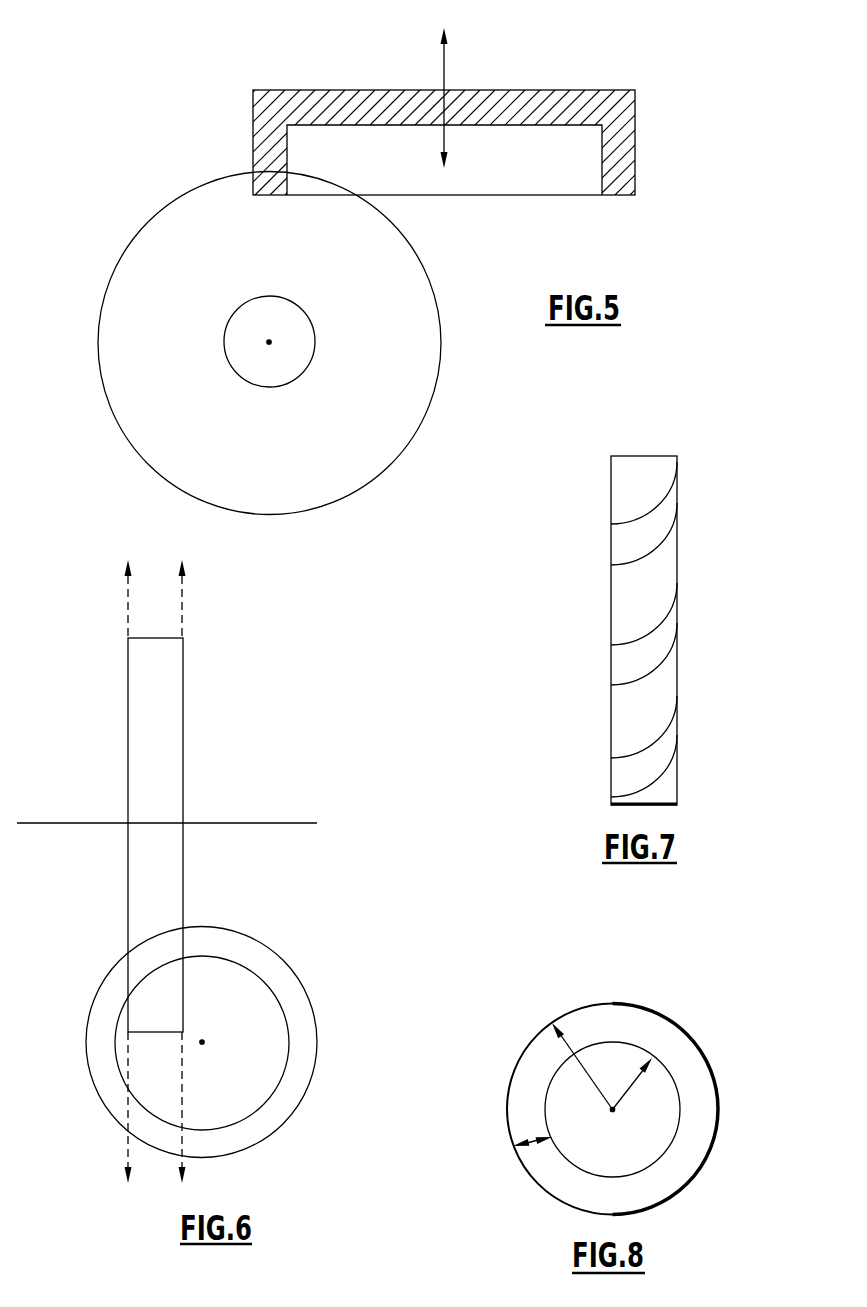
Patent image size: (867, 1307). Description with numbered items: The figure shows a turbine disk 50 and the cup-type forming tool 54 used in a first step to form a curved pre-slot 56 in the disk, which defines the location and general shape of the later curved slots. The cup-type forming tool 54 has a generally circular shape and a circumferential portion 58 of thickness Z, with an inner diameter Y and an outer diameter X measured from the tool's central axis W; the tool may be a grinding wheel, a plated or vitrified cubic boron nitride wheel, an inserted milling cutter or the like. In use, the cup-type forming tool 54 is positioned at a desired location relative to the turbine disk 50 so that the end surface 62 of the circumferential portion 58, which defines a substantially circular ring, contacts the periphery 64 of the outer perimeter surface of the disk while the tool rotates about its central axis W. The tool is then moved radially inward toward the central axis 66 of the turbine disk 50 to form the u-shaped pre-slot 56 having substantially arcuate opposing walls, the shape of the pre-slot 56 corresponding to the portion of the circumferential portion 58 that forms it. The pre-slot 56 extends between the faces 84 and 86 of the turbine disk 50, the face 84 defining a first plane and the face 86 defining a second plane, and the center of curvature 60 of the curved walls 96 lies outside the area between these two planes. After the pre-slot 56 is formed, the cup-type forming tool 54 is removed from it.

In FIG. 5, the turbine disk 50 is at (130, 403).
In FIG. 6, the turbine disk 50 is at (163, 693).
In FIG. 7, the turbine disk 50 is at (573, 609).
In FIG. 5, the cup-type forming tool 54 is at (480, 98).
In FIG. 6, the cup-type forming tool 54 is at (292, 998).
In FIG. 8, the cup-type forming tool 54 is at (726, 1039).
In FIG. 7, the pre-slot 56 is at (637, 544).
In FIG. 5, the circumferential portion 58 is at (267, 185).
In FIG. 6, the circumferential portion 58 is at (300, 1048).
In FIG. 8, the circumferential portion 58 is at (702, 1120).
In FIG. 6, the center of curvature 60 is at (202, 1042).
In FIG. 5, the end surface 62 is at (272, 195).
In FIG. 5, the periphery 64 is at (440, 360).
In FIG. 5, the central axis 66 is at (269, 342).
In FIG. 6, the central axis 66 is at (153, 822).
In FIG. 6, the face 84 is at (128, 892).
In FIG. 7, the face 84 is at (611, 512).
In FIG. 6, the face 86 is at (183, 882).
In FIG. 7, the face 86 is at (677, 492).
In FIG. 6, the curved walls 96 is at (146, 958).
In FIG. 7, the curved walls 96 is at (662, 514).